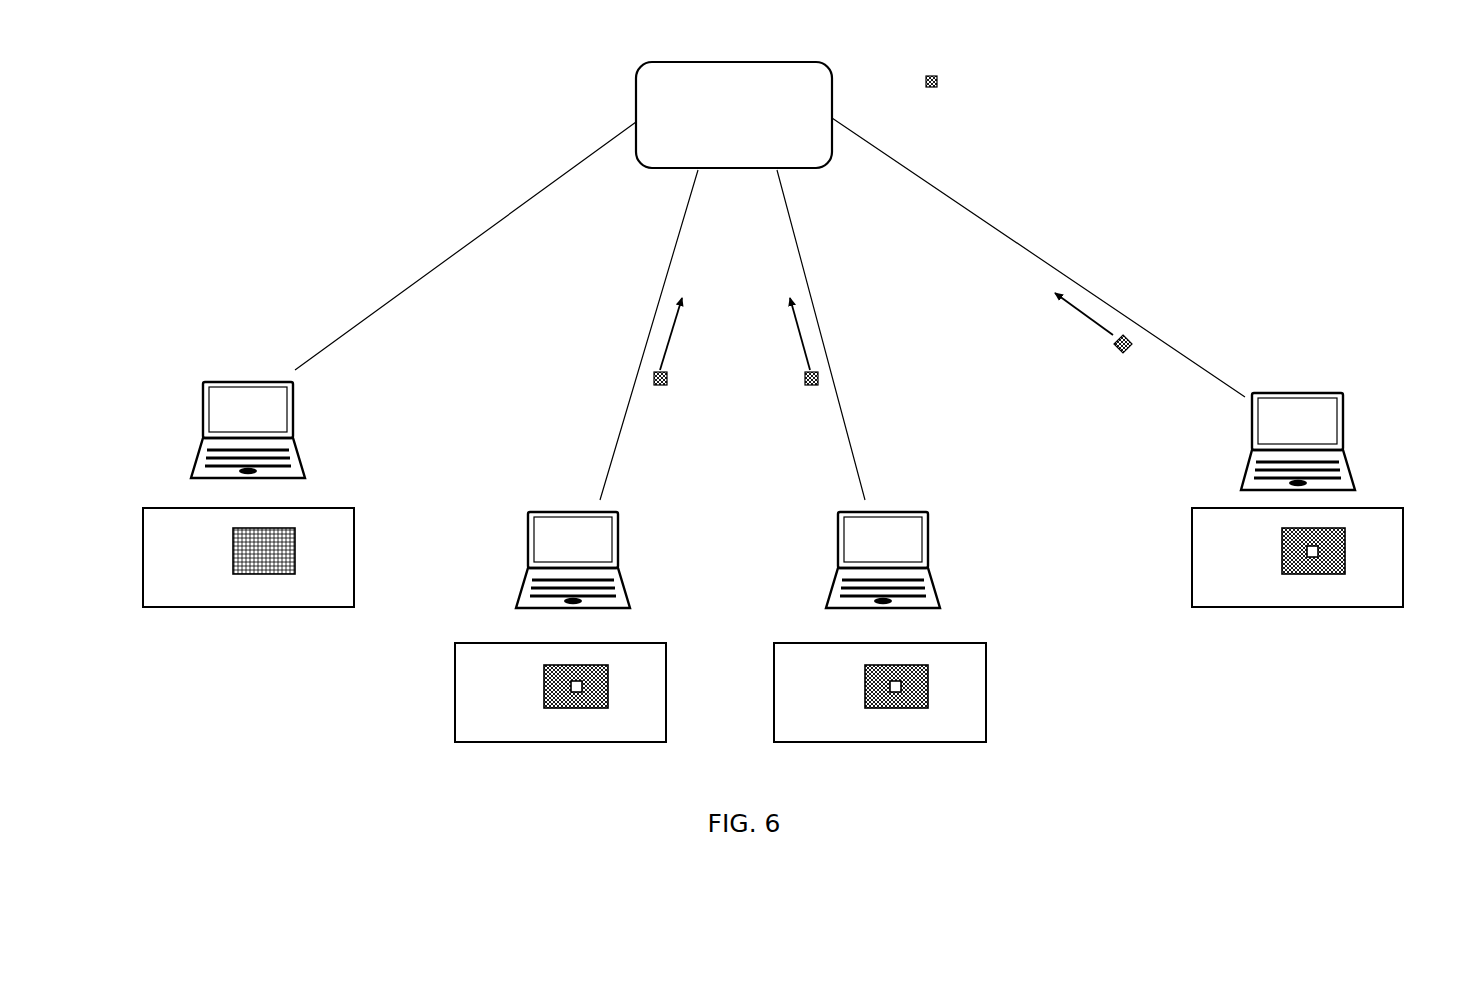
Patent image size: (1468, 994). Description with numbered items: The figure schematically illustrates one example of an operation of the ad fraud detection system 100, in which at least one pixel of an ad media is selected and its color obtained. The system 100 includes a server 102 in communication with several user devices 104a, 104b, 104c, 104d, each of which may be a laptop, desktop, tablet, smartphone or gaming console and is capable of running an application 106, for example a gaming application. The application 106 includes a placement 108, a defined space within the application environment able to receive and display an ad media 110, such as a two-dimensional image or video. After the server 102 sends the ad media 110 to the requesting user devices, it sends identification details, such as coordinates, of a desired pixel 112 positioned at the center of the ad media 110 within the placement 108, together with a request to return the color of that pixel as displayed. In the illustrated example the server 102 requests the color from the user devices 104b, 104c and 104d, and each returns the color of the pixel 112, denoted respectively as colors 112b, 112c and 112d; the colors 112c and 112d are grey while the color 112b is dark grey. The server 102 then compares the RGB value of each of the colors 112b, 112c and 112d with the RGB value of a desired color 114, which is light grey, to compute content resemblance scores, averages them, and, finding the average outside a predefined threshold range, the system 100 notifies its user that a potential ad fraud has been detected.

The ad fraud detection system 100 is at (258, 158).
The server 102 is at (630, 70).
The user device 104a is at (203, 406).
The user device 104b is at (527, 535).
The user device 104c is at (928, 538).
The user device 104d is at (1345, 420).
The application 106 is at (170, 608).
The placement 108 is at (264, 575).
The ad media 110 is at (247, 553).
The pixel 112 is at (582, 708).
The color of pixel 112b is at (661, 386).
The color of pixel 112c is at (811, 386).
The color of pixel 112d is at (1120, 354).
The desired color 114 is at (940, 78).